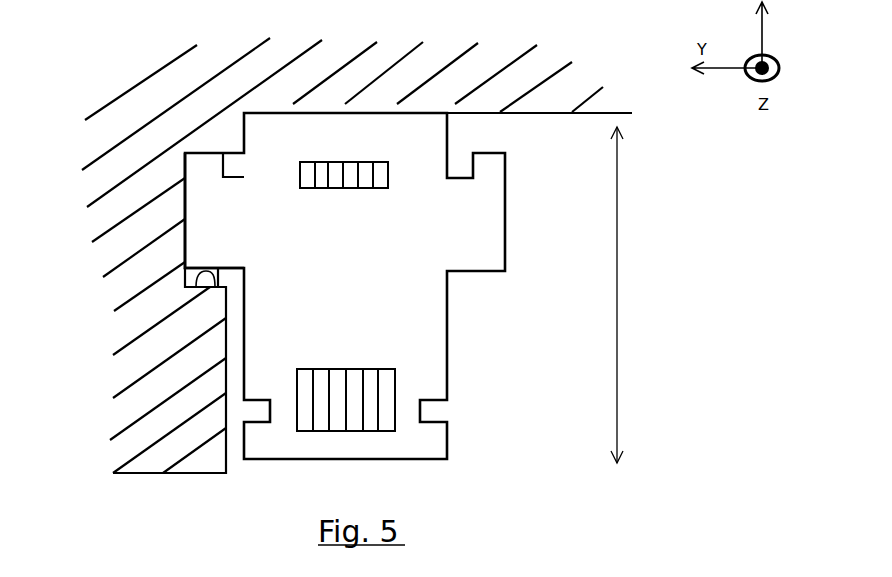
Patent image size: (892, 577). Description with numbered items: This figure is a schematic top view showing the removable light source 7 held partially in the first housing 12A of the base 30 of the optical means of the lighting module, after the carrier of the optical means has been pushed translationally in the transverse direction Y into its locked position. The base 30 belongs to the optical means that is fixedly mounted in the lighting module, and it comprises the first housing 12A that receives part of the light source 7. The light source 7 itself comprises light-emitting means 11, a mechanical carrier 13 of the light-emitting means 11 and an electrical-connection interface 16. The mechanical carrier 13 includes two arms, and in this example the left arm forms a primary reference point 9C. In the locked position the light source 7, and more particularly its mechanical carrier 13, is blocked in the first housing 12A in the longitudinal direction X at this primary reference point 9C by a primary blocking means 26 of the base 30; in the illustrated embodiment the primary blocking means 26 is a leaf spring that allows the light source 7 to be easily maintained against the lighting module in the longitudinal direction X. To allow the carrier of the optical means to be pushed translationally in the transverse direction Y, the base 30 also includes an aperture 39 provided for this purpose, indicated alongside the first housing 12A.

The light source 7 is at (268, 473).
The primary reference point 9C is at (212, 253).
The light-emitting means 11 is at (322, 172).
The first housing 12A is at (492, 320).
The mechanical carrier 13 is at (353, 294).
The electrical-connection interface 16 is at (380, 397).
The primary blocking means 26 is at (187, 270).
The base 30 is at (453, 75).
The aperture 39 is at (617, 297).